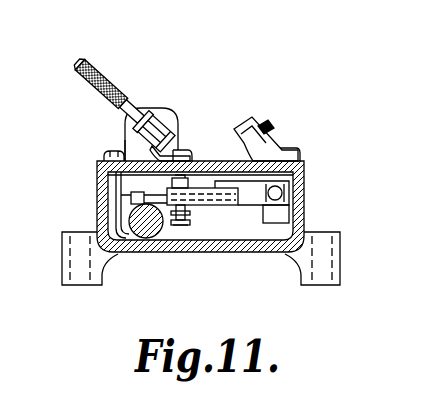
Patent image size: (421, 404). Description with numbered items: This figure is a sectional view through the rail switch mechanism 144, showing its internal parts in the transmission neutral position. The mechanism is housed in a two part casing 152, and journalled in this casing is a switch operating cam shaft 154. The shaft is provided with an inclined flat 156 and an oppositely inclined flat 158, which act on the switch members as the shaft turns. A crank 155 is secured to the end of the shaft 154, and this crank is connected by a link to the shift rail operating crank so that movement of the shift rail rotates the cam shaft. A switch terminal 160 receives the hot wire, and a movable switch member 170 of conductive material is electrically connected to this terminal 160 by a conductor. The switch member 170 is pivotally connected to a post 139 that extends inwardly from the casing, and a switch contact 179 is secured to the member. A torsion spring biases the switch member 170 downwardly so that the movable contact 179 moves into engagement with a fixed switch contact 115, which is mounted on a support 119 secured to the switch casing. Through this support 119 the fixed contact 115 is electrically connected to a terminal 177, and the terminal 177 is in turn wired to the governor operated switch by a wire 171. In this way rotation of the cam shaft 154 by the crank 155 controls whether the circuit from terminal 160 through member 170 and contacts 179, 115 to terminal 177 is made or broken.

The fixed switch contact 115 is at (190, 214).
The support 119 is at (179, 226).
The post 139 is at (280, 212).
The rail switch mechanism 144 is at (279, 96).
The two part casing 152 is at (218, 251).
The switch operating cam shaft 154 is at (145, 238).
The crank 155 is at (125, 140).
The inclined flat 156 is at (132, 192).
The oppositely inclined flat 158 is at (134, 208).
The switch terminal 160 is at (265, 128).
The movable switch member 170 is at (233, 189).
The wire 171 is at (106, 78).
The terminal 177 is at (178, 123).
The switch contact 179 is at (190, 207).